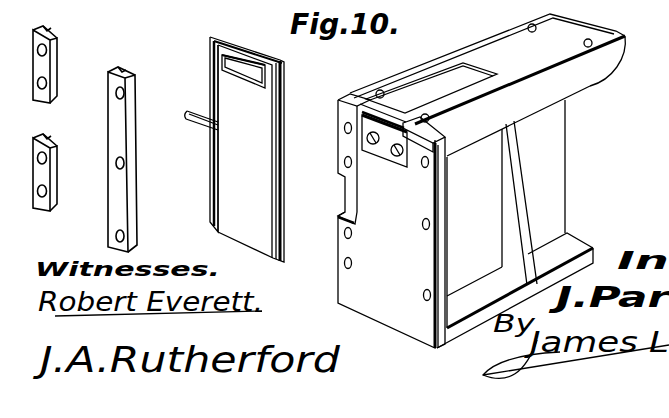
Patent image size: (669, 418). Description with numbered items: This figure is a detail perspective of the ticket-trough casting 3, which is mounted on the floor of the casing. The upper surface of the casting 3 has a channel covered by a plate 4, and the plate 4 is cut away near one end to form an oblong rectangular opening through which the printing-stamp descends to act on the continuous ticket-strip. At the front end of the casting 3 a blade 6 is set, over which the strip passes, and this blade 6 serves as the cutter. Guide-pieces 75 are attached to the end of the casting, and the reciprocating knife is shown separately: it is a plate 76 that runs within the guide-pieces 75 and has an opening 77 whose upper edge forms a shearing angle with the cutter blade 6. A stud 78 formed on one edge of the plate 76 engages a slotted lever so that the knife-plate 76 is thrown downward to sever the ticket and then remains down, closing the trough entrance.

The casting 3 is at (465, 221).
The plate 4 is at (487, 85).
The blade 6 is at (386, 146).
The guide-pieces 75 is at (107, 120).
The plate 76 is at (247, 149).
The opening 77 is at (258, 77).
The stud 78 is at (190, 108).